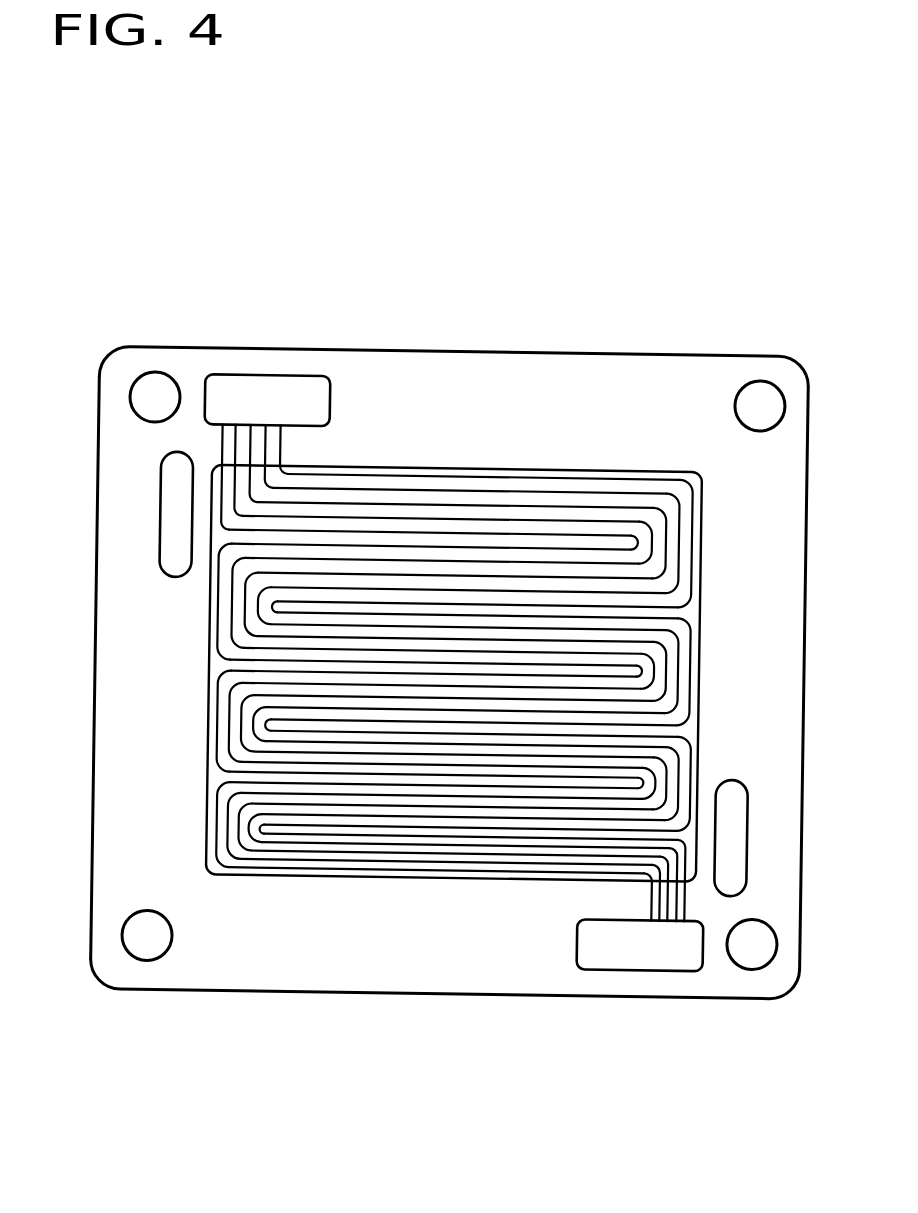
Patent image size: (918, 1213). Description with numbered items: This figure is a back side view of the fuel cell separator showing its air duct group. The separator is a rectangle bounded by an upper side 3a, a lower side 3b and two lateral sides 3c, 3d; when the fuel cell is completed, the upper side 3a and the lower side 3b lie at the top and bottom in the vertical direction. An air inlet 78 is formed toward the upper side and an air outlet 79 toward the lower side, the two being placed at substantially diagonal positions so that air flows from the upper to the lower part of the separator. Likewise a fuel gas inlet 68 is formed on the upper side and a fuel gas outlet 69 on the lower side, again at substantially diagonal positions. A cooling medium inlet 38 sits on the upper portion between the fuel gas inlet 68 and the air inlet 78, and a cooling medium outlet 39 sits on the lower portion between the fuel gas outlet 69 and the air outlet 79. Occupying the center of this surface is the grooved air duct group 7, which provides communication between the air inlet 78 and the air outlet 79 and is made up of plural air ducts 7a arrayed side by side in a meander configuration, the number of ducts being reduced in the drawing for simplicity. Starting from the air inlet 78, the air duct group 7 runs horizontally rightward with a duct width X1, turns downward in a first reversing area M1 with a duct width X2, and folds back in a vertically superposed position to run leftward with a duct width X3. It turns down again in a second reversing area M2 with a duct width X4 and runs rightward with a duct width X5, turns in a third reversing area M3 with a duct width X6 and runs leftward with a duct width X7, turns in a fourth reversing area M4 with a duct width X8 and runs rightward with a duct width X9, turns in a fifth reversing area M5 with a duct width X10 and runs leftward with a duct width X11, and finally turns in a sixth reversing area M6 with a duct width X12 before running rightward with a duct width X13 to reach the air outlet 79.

The upper side 3a is at (490, 352).
The lower side 3b is at (357, 994).
The lateral side 3c is at (806, 647).
The lateral side 3d is at (96, 633).
The grooved air duct group 7 is at (316, 478).
The air duct 7a is at (604, 480).
The cooling medium inlet 38 is at (148, 399).
The cooling medium outlet 39 is at (746, 944).
The fuel gas inlet 68 is at (168, 531).
The fuel gas outlet 69 is at (738, 841).
The air inlet 78 is at (289, 410).
The air outlet 79 is at (636, 955).
The first reversing area M1 is at (688, 522).
The second reversing area M2 is at (224, 584).
The third reversing area M3 is at (687, 650).
The fourth reversing area M4 is at (229, 714).
The fifth reversing area M5 is at (687, 760).
The sixth reversing area M6 is at (223, 816).
The duct width X1 is at (355, 518).
The duct width X2 is at (632, 540).
The duct width X3 is at (438, 618).
The duct width X4 is at (276, 610).
The duct width X5 is at (388, 658).
The duct width X6 is at (638, 668).
The duct width X7 is at (509, 745).
The duct width X8 is at (271, 728).
The duct width X9 is at (546, 800).
The duct width X10 is at (641, 780).
The duct width X11 is at (378, 788).
The duct width X12 is at (266, 832).
The duct width X13 is at (571, 832).